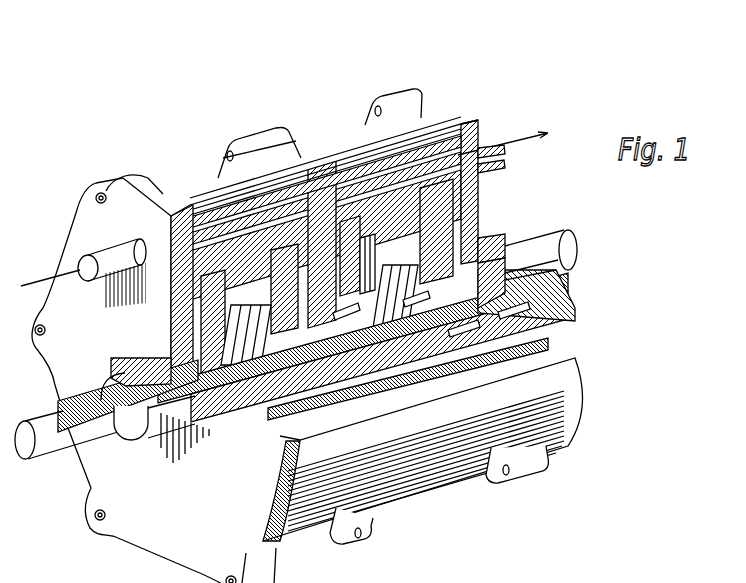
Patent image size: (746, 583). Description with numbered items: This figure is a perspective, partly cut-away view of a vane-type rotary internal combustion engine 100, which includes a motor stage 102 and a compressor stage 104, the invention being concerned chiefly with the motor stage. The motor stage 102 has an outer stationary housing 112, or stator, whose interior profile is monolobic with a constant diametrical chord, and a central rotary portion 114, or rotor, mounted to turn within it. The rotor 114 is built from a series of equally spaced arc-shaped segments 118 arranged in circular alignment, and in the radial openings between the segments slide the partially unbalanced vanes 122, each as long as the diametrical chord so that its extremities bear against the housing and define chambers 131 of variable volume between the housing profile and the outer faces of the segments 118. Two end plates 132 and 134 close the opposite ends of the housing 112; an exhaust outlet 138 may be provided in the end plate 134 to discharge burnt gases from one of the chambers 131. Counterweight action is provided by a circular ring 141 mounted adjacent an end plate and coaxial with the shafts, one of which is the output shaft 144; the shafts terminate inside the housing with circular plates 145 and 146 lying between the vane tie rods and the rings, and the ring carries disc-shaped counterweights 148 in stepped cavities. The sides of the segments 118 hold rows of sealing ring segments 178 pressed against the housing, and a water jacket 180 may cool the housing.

The vane-type rotary internal combustion engine 100 is at (262, 101).
The motor stage 102 is at (334, 121).
The compressor stage 104 is at (185, 170).
The outer stationary housing 112 is at (545, 418).
The central rotary portion 114 is at (474, 334).
The arc-shaped segments 118 is at (393, 207).
The partially unbalanced vanes 122 is at (374, 370).
The chambers 131 is at (473, 127).
The end plate 132 is at (395, 500).
The end plate 134 is at (448, 108).
The exhaust outlet 138 is at (481, 150).
The circular ring 141 is at (316, 200).
The output shaft 144 is at (568, 243).
The circular plate 145 is at (350, 200).
The circular plate 146 is at (472, 202).
The disc-shaped counterweights 148 is at (472, 214).
The sealing ring segments 178 is at (464, 176).
The water jacket 180 is at (378, 205).